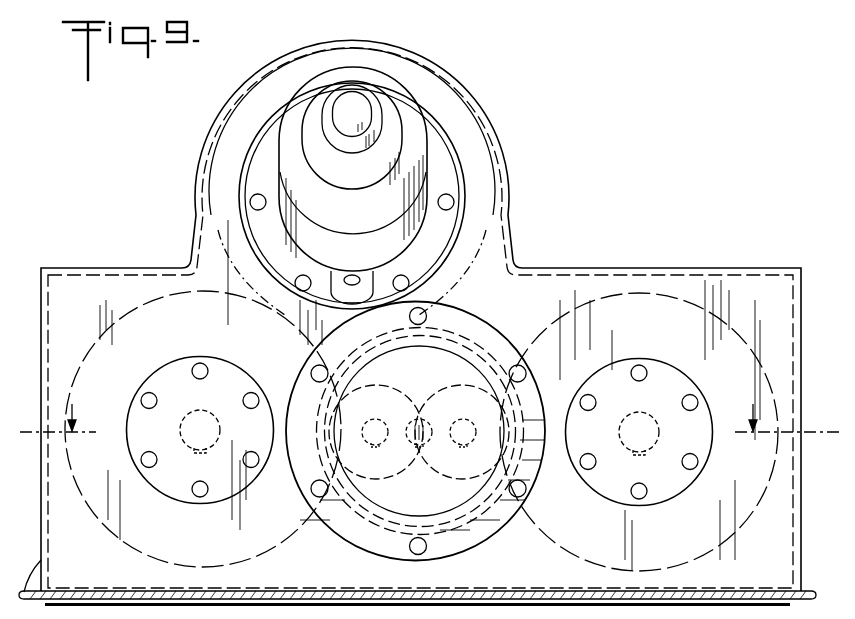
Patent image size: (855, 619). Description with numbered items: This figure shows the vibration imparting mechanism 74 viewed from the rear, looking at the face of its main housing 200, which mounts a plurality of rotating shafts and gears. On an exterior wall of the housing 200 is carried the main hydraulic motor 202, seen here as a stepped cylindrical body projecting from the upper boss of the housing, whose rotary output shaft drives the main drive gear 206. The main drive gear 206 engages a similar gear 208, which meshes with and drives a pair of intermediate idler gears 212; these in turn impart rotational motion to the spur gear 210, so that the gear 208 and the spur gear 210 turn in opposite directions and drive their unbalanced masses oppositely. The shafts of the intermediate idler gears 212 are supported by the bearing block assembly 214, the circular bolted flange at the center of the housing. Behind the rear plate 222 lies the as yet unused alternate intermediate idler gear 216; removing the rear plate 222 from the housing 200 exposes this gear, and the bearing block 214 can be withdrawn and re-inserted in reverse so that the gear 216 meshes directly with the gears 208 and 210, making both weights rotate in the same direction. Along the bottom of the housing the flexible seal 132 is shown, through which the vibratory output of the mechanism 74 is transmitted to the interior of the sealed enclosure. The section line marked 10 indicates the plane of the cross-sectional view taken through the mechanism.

The vibration imparting mechanism 74 is at (192, 247).
The main housing 200 is at (565, 268).
The main hydraulic motor 202 is at (420, 108).
The main drive gear 206 is at (214, 163).
The gear 208 is at (127, 307).
The spur gear 210 is at (760, 313).
The intermediate idler gears 212 is at (452, 376).
The bearing block assembly 214 is at (360, 520).
The alternate intermediate idler gear 216 is at (523, 360).
The rear plate 222 is at (484, 374).
The flexible seal 132 is at (40, 562).
The section line 10- 10 is at (431, 432).